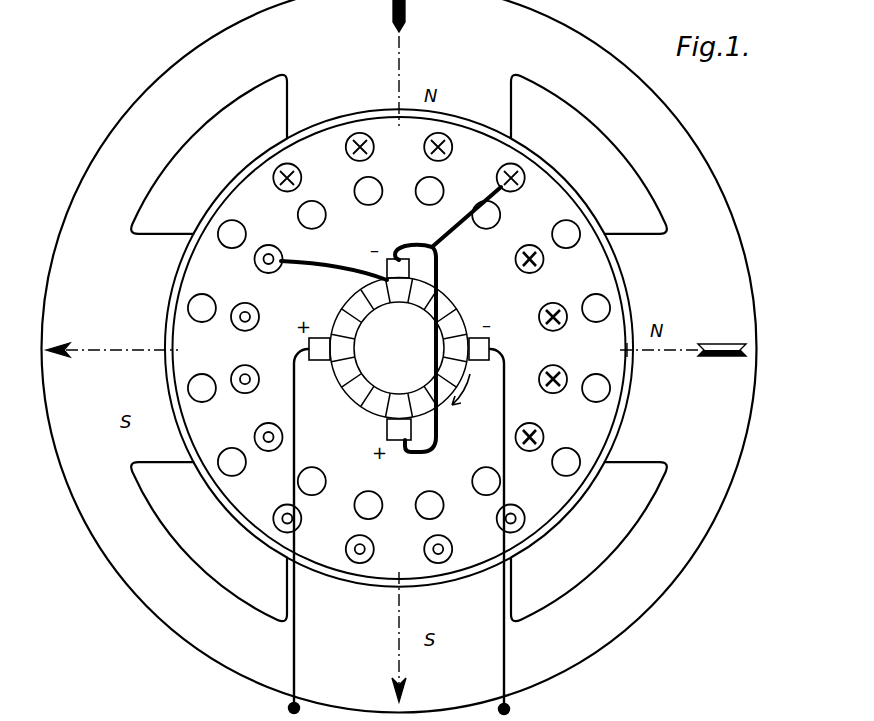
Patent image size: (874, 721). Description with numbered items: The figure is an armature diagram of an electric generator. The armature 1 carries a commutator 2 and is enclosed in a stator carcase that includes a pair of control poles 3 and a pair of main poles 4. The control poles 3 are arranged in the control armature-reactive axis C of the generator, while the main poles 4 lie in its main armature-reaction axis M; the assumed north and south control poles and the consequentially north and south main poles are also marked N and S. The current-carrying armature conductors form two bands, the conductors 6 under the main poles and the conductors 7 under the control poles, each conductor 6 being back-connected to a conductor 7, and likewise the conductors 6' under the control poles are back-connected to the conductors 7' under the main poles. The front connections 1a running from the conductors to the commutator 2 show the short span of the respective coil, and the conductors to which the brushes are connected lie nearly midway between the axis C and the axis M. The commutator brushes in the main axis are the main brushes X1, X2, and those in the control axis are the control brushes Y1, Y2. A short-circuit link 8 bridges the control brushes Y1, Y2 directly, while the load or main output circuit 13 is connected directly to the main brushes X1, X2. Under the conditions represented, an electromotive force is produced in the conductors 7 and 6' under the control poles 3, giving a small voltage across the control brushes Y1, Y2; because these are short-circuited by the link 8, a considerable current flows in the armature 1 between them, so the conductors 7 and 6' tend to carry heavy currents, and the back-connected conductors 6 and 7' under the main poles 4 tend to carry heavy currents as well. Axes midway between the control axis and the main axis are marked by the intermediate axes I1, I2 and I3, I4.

The armature 1 is at (399, 348).
The front connections 1a is at (391, 319).
The commutator 2 is at (366, 375).
The control poles 3 is at (399, 338).
The main poles 4 is at (395, 348).
The armature conductors 6 is at (399, 348).
The armature conductors 6' is at (399, 348).
The armature conductors 7 is at (398, 348).
The armature conductors 7' is at (399, 348).
The short-circuit link 8 is at (443, 340).
The main output circuit 13 is at (405, 531).
The main brush X1 is at (319, 367).
The main brush X2 is at (484, 367).
The control brush Y1 is at (410, 435).
The control brush Y2 is at (410, 274).
The intermediate axis I1 is at (209, 154).
The intermediate axis I2 is at (589, 541).
The intermediate axis I3 is at (589, 154).
The intermediate axis I4 is at (209, 541).
The control armature-reactive axis C is at (389, 351).
The main armature-reaction axis M is at (396, 341).